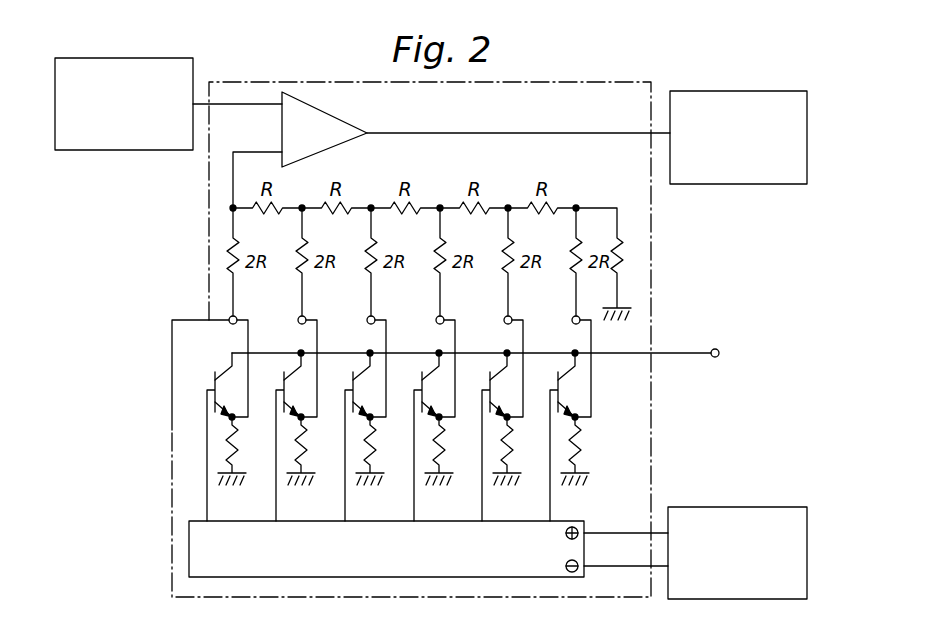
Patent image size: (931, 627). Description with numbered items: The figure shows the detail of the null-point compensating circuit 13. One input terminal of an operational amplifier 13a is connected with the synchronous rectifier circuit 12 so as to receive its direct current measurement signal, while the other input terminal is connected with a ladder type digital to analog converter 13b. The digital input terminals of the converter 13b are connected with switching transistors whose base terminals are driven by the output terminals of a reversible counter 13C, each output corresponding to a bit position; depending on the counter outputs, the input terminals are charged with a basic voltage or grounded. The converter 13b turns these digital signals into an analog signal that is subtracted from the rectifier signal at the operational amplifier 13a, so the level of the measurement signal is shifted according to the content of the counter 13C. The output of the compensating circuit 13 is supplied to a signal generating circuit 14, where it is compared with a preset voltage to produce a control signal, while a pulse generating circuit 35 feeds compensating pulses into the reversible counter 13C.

The synchronous rectifier circuit 12 is at (142, 150).
The null-point compensating circuit 13 is at (651, 404).
The operational amplifier 13a is at (342, 127).
The ladder type digital to analog converter 13b is at (500, 200).
The reversible counter 13C is at (566, 521).
The signal generating circuit 14 is at (766, 184).
The pulse generating circuit 35 is at (724, 507).